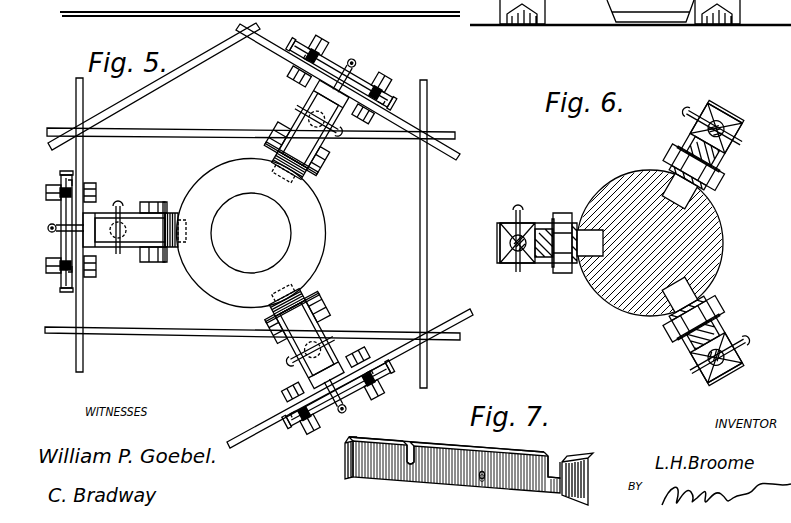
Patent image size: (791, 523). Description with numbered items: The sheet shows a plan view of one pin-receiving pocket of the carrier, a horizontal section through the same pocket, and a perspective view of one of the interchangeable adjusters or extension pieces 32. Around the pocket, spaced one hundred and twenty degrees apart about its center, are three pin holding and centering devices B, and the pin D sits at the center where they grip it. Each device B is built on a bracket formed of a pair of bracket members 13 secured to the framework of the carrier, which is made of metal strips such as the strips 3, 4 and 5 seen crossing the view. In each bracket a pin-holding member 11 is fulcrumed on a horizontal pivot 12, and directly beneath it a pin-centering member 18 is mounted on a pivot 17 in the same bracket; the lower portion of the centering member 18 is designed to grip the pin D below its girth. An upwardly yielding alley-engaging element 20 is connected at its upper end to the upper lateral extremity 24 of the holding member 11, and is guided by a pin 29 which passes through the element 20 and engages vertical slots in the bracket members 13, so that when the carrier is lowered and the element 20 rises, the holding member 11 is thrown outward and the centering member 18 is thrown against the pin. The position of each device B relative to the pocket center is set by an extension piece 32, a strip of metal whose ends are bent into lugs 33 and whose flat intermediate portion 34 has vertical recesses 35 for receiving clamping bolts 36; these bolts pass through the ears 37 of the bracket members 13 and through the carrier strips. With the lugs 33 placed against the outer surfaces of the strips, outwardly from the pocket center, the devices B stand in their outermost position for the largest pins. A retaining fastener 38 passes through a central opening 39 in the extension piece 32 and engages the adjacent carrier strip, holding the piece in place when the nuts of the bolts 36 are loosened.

In FIG. 5, the carrier strip 3 is at (198, 131).
In FIG. 5, the carrier strip 4 is at (82, 318).
In FIG. 5, the carrier strip 5 is at (222, 54).
In FIG. 5, the pin-holding member 11 is at (286, 174).
In FIG. 5, the horizontal pivot 12 is at (150, 262).
In FIG. 5, the bracket members 13 is at (280, 160).
In FIG. 6, the bracket members 13 is at (540, 220).
In FIG. 5, the pivot 17 is at (170, 260).
In FIG. 6, the pivot 17 is at (565, 270).
In FIG. 6, the pin-centering member 18 is at (548, 265).
In FIG. 6, the upwardly yielding element 20 is at (500, 247).
In FIG. 5, the upper lateral extremity 24 is at (297, 107).
In FIG. 5, the pin 29 is at (340, 128).
In FIG. 6, the pin 29 is at (517, 270).
In FIG. 5, the adjusting or extension piece 32 is at (63, 218).
In FIG. 7, the adjusting or extension piece 32 is at (452, 480).
In FIG. 5, the lugs 33 is at (396, 106).
In FIG. 7, the lugs 33 is at (355, 478).
In FIG. 5, the flat intermediate portion 34 is at (363, 79).
In FIG. 7, the flat intermediate portion 34 is at (514, 454).
In FIG. 5, the vertical recesses 35 is at (68, 192).
In FIG. 7, the vertical recesses 35 is at (413, 445).
In FIG. 5, the clamping bolts 36 is at (53, 183).
In FIG. 5, the ears 37 is at (380, 340).
In FIG. 5, the retaining fastener 38 is at (370, 62).
In FIG. 7, the central opening 39 is at (486, 480).
In FIG. 5, the pin holding and centering device B is at (216, 234).
In FIG. 6, the pin holding and centering device B is at (511, 211).
In FIG. 5, the pin D is at (251, 233).
In FIG. 6, the pin D is at (722, 250).